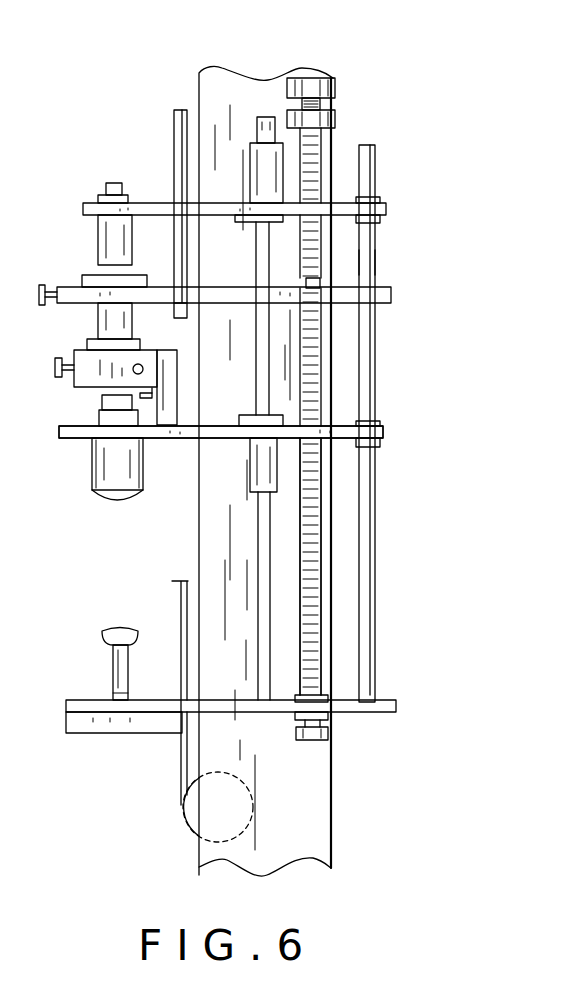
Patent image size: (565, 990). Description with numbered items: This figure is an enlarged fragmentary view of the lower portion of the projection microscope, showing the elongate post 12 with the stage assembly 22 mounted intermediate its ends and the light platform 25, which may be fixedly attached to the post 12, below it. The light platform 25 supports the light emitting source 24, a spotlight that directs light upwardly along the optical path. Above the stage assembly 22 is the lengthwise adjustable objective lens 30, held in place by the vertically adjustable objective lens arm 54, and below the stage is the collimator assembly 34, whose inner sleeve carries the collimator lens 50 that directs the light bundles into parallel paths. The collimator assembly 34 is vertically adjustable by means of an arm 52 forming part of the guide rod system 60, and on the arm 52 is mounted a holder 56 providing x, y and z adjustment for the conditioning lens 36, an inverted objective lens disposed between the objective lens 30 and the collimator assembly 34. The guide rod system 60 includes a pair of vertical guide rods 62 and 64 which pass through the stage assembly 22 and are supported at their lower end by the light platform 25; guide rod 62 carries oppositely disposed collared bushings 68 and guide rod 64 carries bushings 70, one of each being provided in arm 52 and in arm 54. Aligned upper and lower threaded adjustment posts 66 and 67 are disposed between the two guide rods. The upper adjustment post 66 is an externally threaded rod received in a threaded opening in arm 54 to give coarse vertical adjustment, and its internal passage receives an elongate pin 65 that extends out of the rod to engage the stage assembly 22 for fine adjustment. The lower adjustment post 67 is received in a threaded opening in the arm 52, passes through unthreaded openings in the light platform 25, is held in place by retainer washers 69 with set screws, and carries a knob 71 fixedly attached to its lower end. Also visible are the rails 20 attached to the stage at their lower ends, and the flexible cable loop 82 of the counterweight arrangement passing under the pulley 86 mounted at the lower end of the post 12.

The post 12 is at (197, 542).
The rails 20 is at (174, 127).
The stage assembly 22 is at (398, 296).
The light emitting source 24 is at (118, 632).
The light platform 25 is at (348, 700).
The objective lens 30 is at (96, 242).
The collimator assembly 34 is at (93, 495).
The conditioning lens 36 is at (98, 324).
The collimator lens 50 is at (102, 407).
The arm 52 is at (340, 427).
The objective lens arm 54 is at (158, 203).
The holder 56 is at (74, 357).
The guide rod system 60 is at (378, 263).
The guide rod 62 is at (256, 118).
The guide rod 64 is at (376, 152).
The pin 65 is at (318, 283).
The upper adjustment post 66 is at (322, 142).
The lower adjustment post 67 is at (322, 527).
The collared bushings 68 is at (252, 162).
The retainer washers 69 is at (328, 698).
The bushings 70 is at (380, 220).
The knob 71 is at (317, 748).
The flexible cable loop 82 is at (181, 615).
The pulley 86 is at (187, 823).